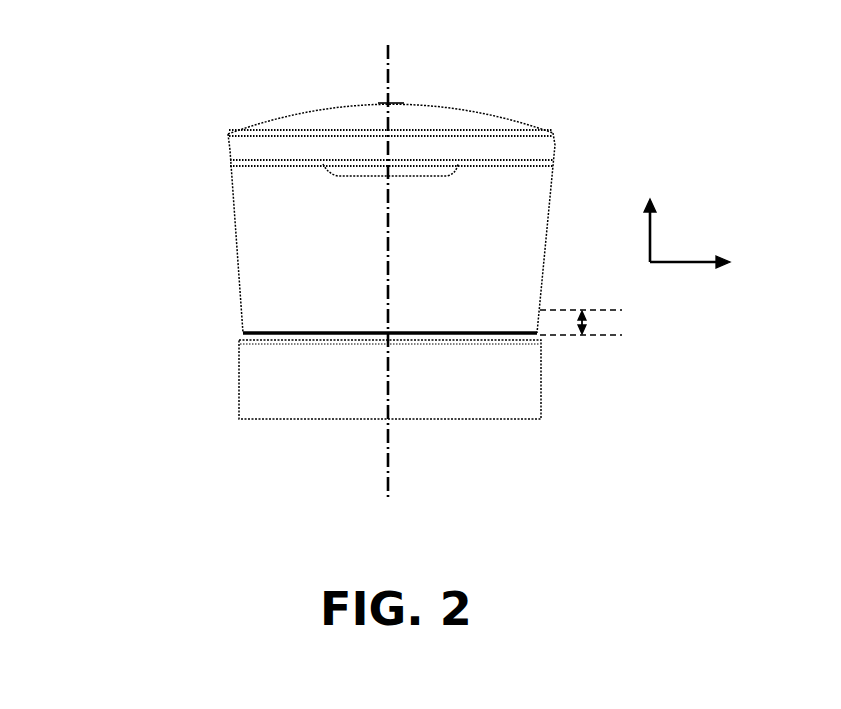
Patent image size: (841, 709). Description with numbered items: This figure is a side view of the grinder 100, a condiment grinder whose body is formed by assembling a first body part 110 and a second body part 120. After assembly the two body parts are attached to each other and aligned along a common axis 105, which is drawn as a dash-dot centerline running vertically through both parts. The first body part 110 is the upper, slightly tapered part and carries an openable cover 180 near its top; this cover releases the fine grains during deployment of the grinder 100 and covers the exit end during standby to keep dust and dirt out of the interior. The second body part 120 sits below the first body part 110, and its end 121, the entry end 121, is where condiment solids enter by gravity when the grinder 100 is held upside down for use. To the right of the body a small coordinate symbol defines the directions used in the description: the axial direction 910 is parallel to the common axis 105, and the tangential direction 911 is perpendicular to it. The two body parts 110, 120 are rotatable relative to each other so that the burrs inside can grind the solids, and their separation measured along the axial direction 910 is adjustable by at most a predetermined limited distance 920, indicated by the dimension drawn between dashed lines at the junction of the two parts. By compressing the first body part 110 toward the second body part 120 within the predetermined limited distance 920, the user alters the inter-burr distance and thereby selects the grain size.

The grinder 100 is at (222, 50).
The common axis 105 is at (385, 453).
The first body part 110 is at (249, 193).
The second body part 120 is at (265, 361).
The entry end 121 is at (401, 440).
The openable cover 180 is at (428, 146).
The axial direction 910 is at (648, 234).
The tangential direction 911 is at (693, 262).
The predetermined limited distance 920 is at (605, 328).